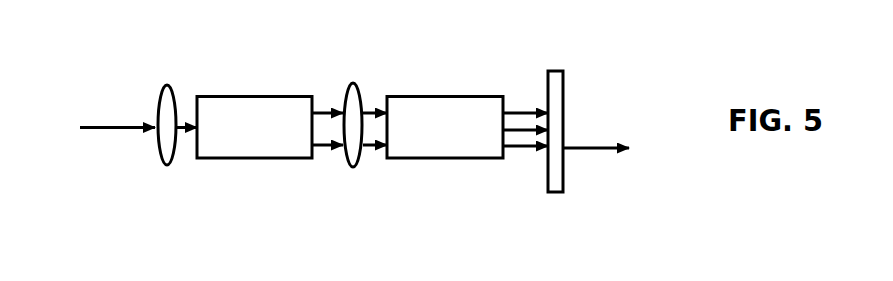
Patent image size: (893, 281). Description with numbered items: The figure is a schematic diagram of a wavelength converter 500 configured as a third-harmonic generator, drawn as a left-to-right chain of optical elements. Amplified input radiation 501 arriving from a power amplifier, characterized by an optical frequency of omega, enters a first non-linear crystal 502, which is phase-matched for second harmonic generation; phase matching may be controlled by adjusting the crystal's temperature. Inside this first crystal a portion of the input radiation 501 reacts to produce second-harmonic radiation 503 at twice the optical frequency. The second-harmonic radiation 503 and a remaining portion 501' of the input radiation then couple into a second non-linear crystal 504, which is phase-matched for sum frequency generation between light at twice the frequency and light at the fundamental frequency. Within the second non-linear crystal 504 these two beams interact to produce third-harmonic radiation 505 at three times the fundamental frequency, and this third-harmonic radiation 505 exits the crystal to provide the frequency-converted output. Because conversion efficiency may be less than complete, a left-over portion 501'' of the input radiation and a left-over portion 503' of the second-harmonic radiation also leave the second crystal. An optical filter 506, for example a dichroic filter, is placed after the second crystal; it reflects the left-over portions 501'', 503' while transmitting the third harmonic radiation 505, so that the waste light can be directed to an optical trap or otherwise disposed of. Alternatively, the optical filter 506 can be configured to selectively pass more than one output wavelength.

The wavelength converter 500 is at (90, 86).
The input radiation 501 is at (138, 139).
The first non-linear crystal 502 is at (252, 158).
The remaining portion of the input radiation 501' is at (319, 98).
The second-harmonic radiation 503 is at (344, 145).
The second non-linear crystal 504 is at (447, 158).
The left-over portion of the second-harmonic radiation 503' is at (491, 125).
The left-over portion of the input radiation 501'' is at (514, 83).
The third-harmonic radiation 505 is at (525, 147).
The optical filter 506 is at (557, 192).